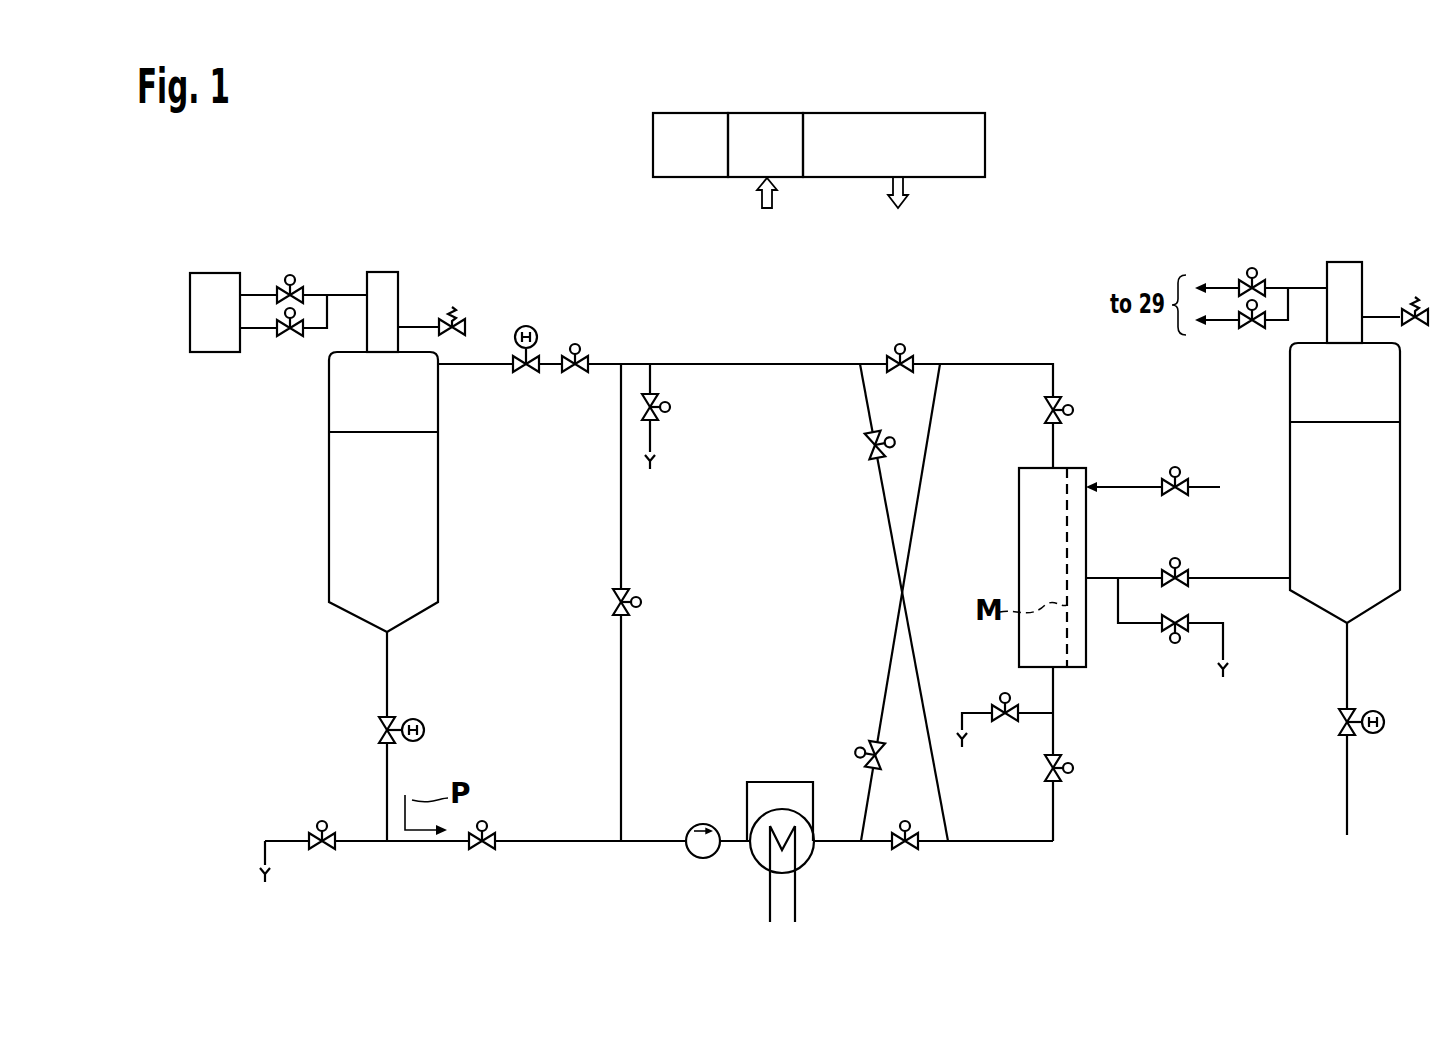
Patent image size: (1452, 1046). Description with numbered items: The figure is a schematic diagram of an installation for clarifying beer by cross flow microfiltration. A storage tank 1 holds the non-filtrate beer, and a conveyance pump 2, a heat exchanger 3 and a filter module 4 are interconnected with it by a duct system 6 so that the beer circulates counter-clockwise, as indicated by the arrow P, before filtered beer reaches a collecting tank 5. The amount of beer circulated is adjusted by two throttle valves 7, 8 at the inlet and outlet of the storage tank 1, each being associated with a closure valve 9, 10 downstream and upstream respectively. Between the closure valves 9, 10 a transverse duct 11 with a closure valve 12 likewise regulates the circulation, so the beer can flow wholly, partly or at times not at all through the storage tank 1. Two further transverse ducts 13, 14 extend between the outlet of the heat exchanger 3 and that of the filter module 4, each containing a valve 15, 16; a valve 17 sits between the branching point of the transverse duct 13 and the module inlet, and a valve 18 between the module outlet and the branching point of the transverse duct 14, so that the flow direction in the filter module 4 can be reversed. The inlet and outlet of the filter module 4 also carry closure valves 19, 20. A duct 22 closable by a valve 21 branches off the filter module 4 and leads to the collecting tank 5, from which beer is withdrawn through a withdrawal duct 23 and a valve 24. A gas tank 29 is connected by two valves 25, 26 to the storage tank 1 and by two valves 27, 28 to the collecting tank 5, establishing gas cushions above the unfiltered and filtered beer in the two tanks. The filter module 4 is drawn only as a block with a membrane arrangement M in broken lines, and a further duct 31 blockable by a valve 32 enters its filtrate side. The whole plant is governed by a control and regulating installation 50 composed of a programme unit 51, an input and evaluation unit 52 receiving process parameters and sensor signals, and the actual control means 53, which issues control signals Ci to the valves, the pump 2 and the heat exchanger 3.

The storage tank 1 is at (329, 420).
The conveyance pump 2 is at (690, 851).
The heat exchanger 3 is at (758, 858).
The filter module 4 is at (1019, 487).
The collecting tank 5 is at (1395, 383).
The duct system 6 is at (585, 845).
The throttle valve 7 is at (534, 356).
The throttle valve 8 is at (377, 730).
The closure valve 9 is at (582, 356).
The closure valve 10 is at (486, 852).
The transverse duct 11 is at (621, 484).
The closure valve 12 is at (612, 602).
The transverse duct 13 is at (915, 527).
The transverse duct 14 is at (863, 400).
The valve 15 is at (868, 748).
The valve 16 is at (870, 448).
The valve 17 is at (908, 852).
The valve 18 is at (893, 350).
The closure valve 19 is at (1068, 776).
The closure valve 20 is at (1060, 405).
The valve 21 is at (1180, 570).
The duct 22 is at (1258, 576).
The withdrawal duct 23 is at (1346, 783).
The valve 24 is at (1337, 722).
The valve 25 is at (298, 290).
The valve 26 is at (283, 337).
The valve 27 is at (1262, 282).
The valve 28 is at (1258, 330).
The gas tank 29 is at (190, 310).
The duct 31 is at (1123, 485).
The valve 32 is at (1182, 478).
The control and regulating installation 50 is at (852, 136).
The programme unit 51 is at (696, 130).
The input and evaluation unit 52 is at (772, 130).
The control means 53 is at (897, 130).